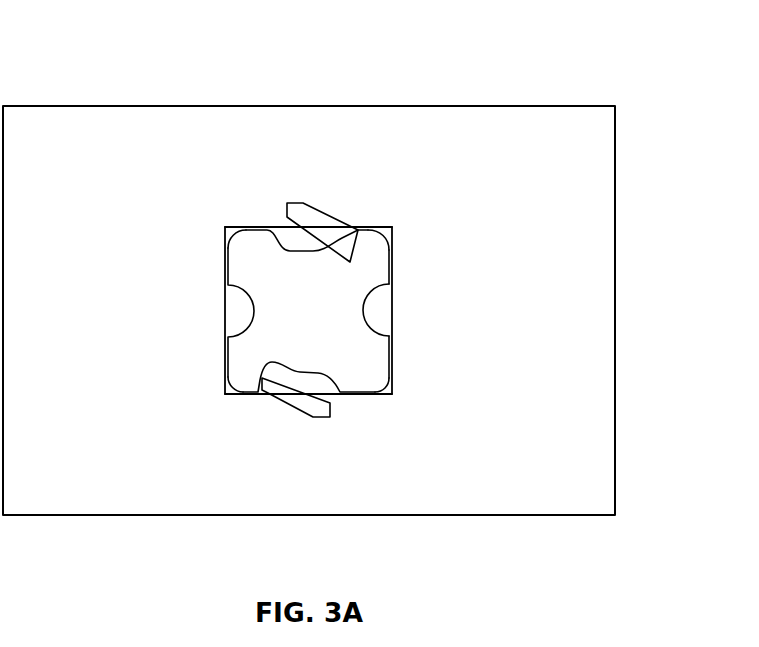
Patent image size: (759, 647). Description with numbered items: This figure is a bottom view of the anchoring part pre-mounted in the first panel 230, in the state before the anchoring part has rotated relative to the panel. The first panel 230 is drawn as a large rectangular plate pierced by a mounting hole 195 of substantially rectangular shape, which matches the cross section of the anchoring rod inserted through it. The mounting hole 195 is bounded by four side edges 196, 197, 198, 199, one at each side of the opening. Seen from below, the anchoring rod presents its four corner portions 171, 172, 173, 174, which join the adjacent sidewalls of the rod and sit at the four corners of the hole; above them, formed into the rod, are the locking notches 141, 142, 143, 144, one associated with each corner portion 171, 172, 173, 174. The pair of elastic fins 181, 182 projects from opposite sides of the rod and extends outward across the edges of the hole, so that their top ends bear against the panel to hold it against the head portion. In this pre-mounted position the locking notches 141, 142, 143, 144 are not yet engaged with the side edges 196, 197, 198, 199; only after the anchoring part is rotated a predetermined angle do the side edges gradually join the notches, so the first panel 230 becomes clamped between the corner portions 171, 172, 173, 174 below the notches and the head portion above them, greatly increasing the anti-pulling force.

The first panel 230 is at (532, 148).
The locking notch 141 is at (348, 195).
The corner portion 171 is at (368, 227).
The locking notch 142 is at (154, 306).
The corner portion 172 is at (225, 229).
The locking notch 143 is at (247, 458).
The corner portion 173 is at (247, 382).
The locking notch 144 is at (503, 317).
The corner portion 174 is at (392, 375).
The mounting hole 195 is at (392, 230).
The side edge 196 is at (240, 245).
The side edge 197 is at (225, 380).
The side edge 198 is at (375, 394).
The side edge 199 is at (392, 325).
The elastic fin 181 is at (308, 217).
The elastic fin 182 is at (307, 410).